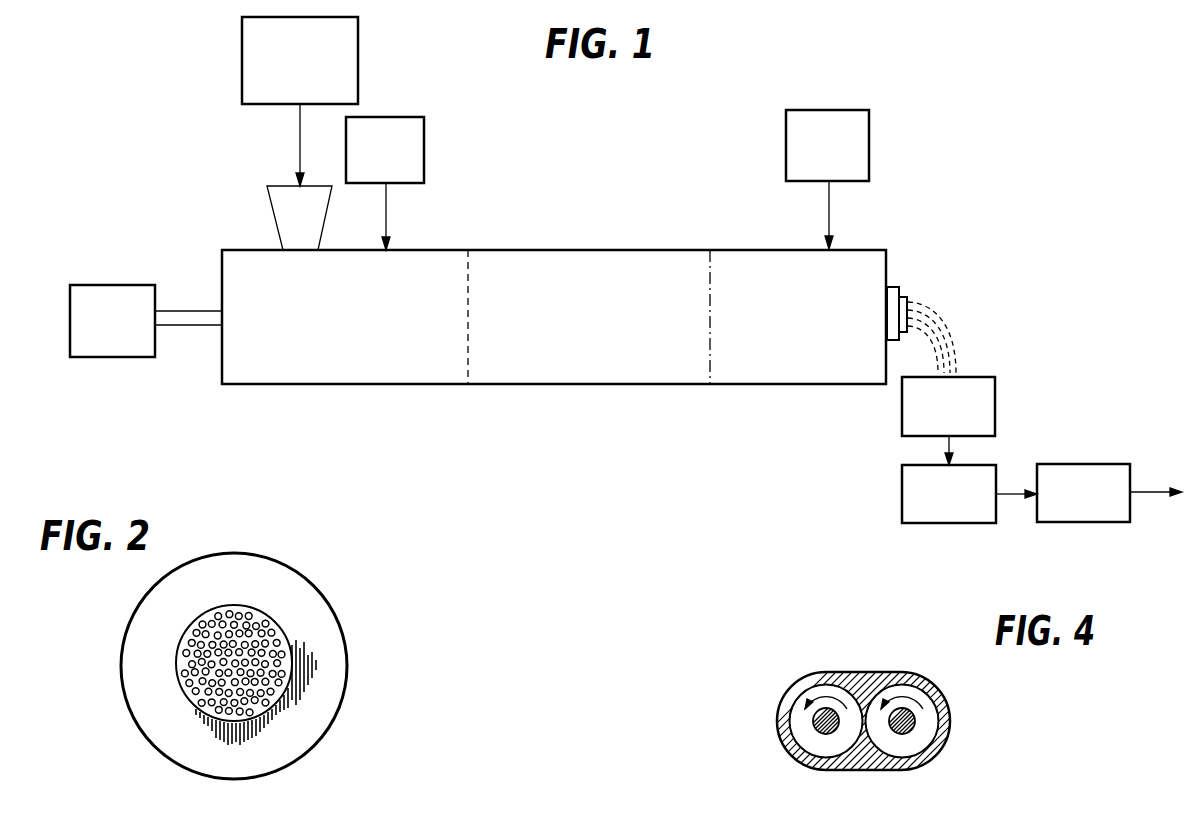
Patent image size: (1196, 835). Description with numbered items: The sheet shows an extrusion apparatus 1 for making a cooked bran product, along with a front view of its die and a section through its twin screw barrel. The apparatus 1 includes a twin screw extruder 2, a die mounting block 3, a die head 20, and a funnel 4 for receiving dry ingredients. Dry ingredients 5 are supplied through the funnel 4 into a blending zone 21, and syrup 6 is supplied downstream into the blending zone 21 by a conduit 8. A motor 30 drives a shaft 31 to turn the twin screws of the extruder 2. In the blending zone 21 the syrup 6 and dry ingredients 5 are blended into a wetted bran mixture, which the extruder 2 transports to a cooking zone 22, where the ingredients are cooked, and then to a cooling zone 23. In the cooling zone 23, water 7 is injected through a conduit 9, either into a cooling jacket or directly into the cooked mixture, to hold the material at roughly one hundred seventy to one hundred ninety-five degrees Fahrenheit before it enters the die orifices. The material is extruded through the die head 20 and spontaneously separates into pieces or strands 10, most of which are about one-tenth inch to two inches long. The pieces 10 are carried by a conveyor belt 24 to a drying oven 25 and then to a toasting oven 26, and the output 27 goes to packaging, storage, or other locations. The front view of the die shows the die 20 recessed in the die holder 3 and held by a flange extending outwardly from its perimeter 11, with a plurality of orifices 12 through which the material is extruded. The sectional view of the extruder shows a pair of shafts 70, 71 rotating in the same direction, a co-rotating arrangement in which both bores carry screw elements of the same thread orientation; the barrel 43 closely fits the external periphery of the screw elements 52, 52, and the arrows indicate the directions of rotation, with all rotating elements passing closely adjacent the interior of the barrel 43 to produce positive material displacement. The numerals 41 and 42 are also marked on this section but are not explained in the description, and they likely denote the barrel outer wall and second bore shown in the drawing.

In FIG. 1, the apparatus 1 is at (886, 210).
In FIG. 1, the twin screw extruder 2 is at (218, 297).
In FIG. 1, the die mounting block 3 is at (893, 287).
In FIG. 2, the die mounting block 3 is at (317, 579).
In FIG. 1, the funnel 4 is at (272, 187).
In FIG. 1, the dry ingredients 5 is at (242, 51).
In FIG. 1, the syrup 6 is at (425, 145).
In FIG. 1, the water 7 is at (786, 149).
In FIG. 1, the conduit 8 is at (387, 216).
In FIG. 1, the conduit 9 is at (828, 205).
In FIG. 1, the strands 10 is at (956, 309).
In FIG. 2, the perimeter 11 is at (252, 606).
In FIG. 2, the orifices 12 is at (186, 658).
In FIG. 1, the die head 20 is at (907, 302).
In FIG. 2, the die head 20 is at (301, 644).
In FIG. 1, the blending zone 21 is at (348, 385).
In FIG. 1, the cooking zone 22 is at (540, 385).
In FIG. 1, the cooling zone 23 is at (768, 385).
In FIG. 1, the conveyor belt 24 is at (997, 406).
In FIG. 1, the drying oven 25 is at (902, 480).
In FIG. 1, the toasting oven 26 is at (1097, 464).
In FIG. 1, the output 27 is at (1143, 492).
In FIG. 1, the motor 30 is at (96, 285).
In FIG. 1, the shaft 31 is at (185, 327).
In FIG. 4, the extruder barrel 41 is at (808, 682).
In FIG. 4, the second bore 42 is at (900, 680).
In FIG. 4, the barrel 43 is at (838, 672).
In FIG. 4, the screw elements 52 is at (800, 733).
In FIG. 4, the shaft 70 is at (918, 716).
In FIG. 4, the shaft 71 is at (820, 730).